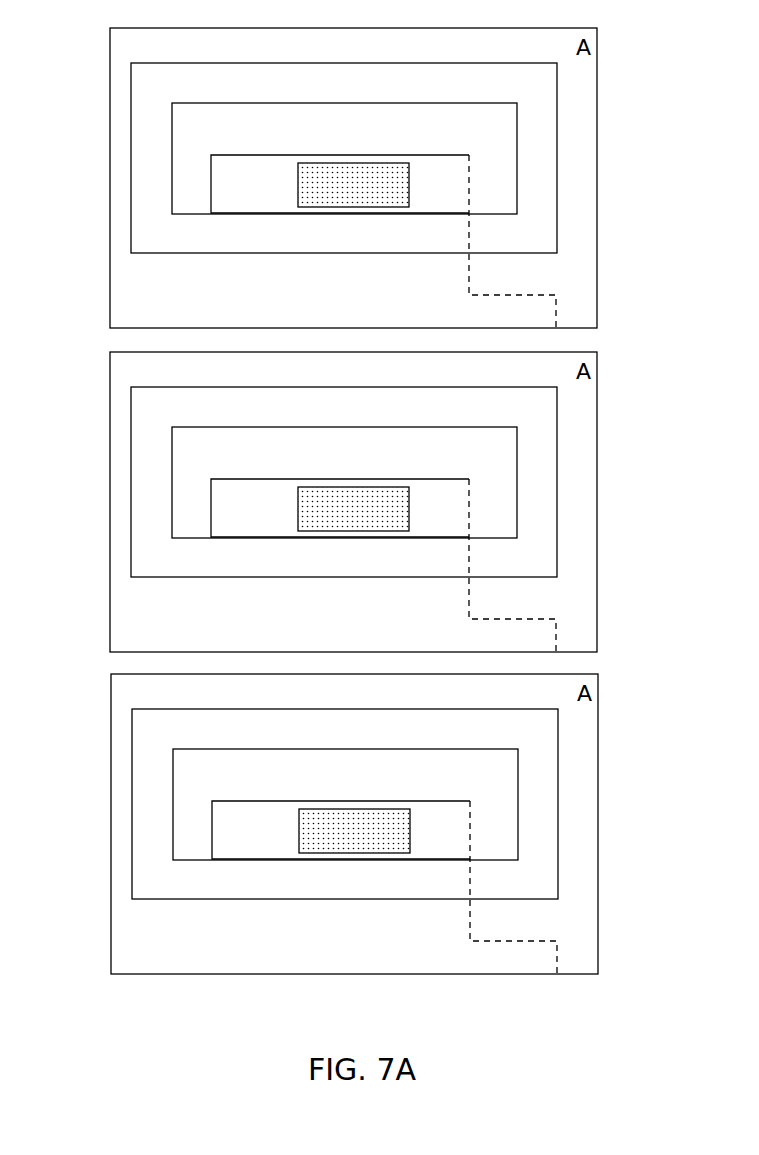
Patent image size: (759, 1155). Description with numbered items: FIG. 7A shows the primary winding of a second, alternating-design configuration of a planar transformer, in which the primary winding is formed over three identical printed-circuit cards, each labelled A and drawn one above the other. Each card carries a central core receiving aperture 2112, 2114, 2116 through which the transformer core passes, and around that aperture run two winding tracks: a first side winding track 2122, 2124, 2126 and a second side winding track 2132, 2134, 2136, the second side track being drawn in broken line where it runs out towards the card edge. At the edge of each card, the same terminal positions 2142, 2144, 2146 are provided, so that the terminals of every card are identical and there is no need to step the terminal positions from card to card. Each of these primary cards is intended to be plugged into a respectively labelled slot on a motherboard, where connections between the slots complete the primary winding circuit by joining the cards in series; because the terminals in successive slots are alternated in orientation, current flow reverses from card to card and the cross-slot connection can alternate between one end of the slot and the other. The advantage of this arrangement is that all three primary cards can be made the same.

The core receiving aperture 2112 is at (409, 188).
The first side winding track 2122 is at (557, 226).
The second side winding track 2132 is at (556, 310).
The terminal positions 2142 is at (557, 329).
The core receiving aperture 2114 is at (489, 481).
The first side winding track 2124 is at (405, 482).
The second side winding track 2134 is at (451, 565).
The terminal positions 2144 is at (359, 529).
The core receiving aperture 2116 is at (490, 803).
The first side winding track 2126 is at (406, 804).
The second side winding track 2136 is at (452, 887).
The terminal positions 2146 is at (366, 857).